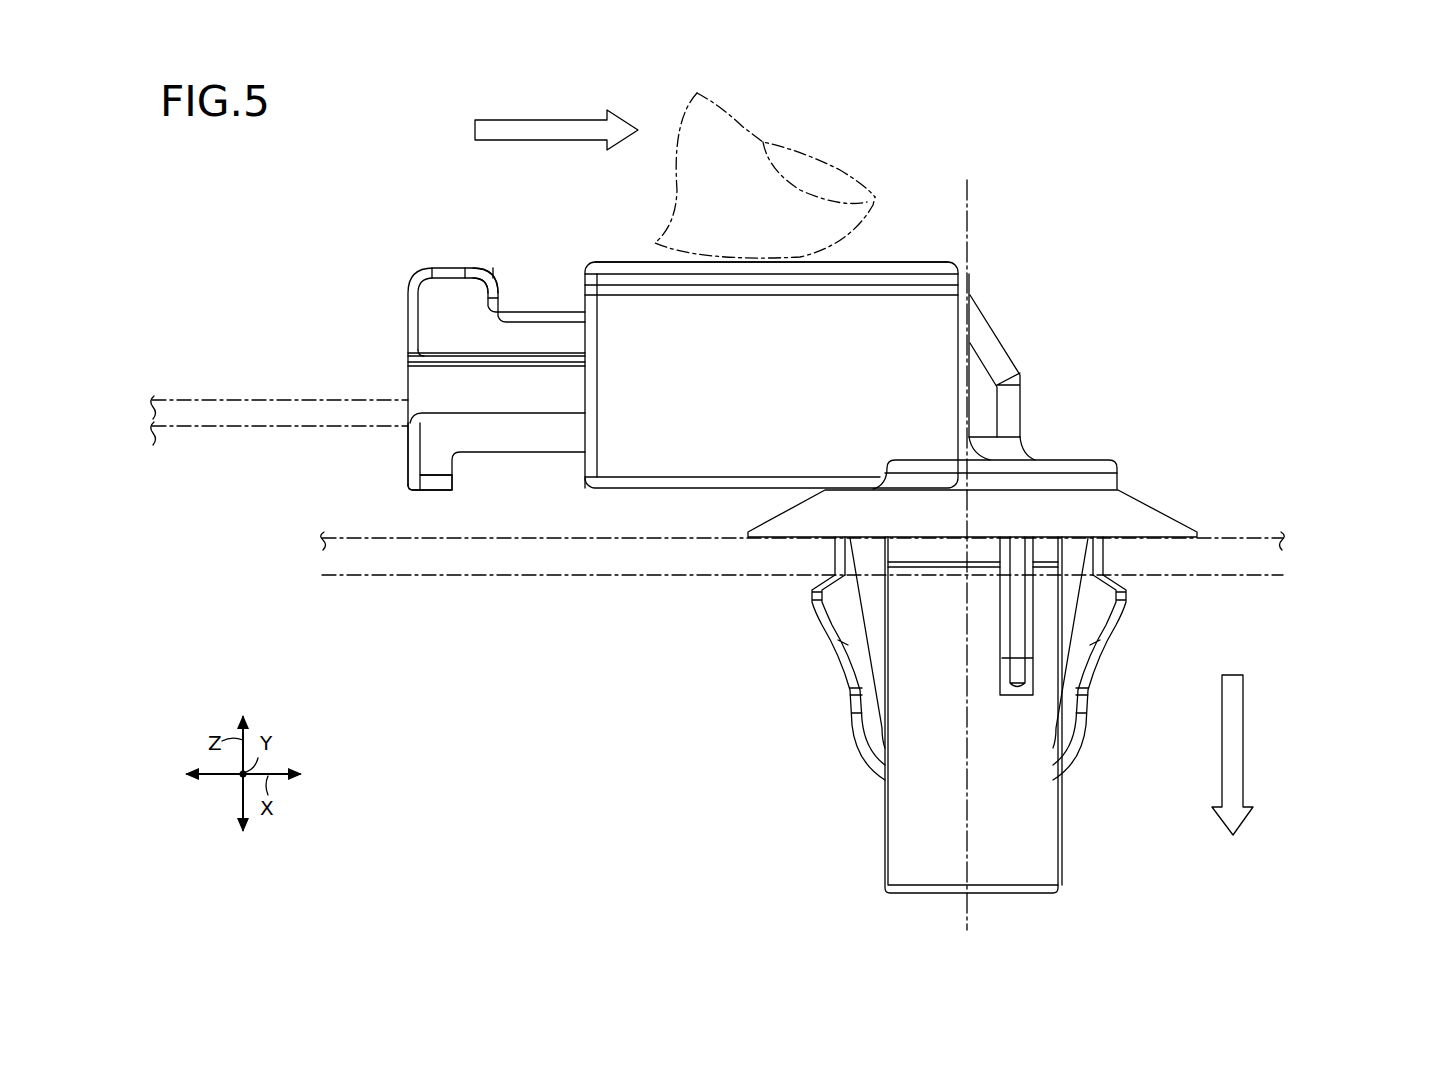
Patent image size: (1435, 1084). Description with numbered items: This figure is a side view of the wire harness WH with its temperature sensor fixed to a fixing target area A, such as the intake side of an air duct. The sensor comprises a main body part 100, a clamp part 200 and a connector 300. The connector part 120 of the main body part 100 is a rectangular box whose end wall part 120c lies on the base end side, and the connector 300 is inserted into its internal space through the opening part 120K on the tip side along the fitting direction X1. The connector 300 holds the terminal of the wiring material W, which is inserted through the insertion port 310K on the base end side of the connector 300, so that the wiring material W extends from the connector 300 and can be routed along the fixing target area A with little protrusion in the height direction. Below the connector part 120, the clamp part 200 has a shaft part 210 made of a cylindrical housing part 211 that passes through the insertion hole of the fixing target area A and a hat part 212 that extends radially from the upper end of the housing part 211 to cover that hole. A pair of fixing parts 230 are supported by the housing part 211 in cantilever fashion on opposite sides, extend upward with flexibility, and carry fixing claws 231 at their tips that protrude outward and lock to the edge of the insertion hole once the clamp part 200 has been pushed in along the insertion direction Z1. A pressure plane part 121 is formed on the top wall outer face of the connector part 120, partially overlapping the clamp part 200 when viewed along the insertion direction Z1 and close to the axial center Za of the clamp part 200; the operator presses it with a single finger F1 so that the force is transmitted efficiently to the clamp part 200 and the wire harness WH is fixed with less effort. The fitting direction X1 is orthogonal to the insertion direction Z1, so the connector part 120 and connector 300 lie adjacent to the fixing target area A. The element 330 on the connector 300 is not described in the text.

The main body part 100 is at (798, 359).
The connector part 120 is at (1000, 342).
The wall part 120c is at (1012, 357).
The opening part 120K is at (583, 465).
The pressure plane part 121 is at (908, 261).
The clamp part 200 is at (1060, 653).
The shaft part 210 is at (1143, 485).
The housing part 211 is at (1062, 844).
The hat part 212 is at (1160, 511).
The fixing parts 230 is at (846, 674).
The fixing claws 231 is at (811, 600).
The connector 300 is at (440, 240).
The insertion port 310K is at (408, 455).
The mating connector lock portion 330 is at (510, 267).
The fixing target area A is at (374, 578).
The wiring material W is at (243, 398).
The wire harness WH is at (1320, 217).
The finger F1 is at (748, 130).
The fitting direction X1 is at (541, 120).
The insertion direction Z1 is at (1243, 740).
The axial center Za is at (968, 192).